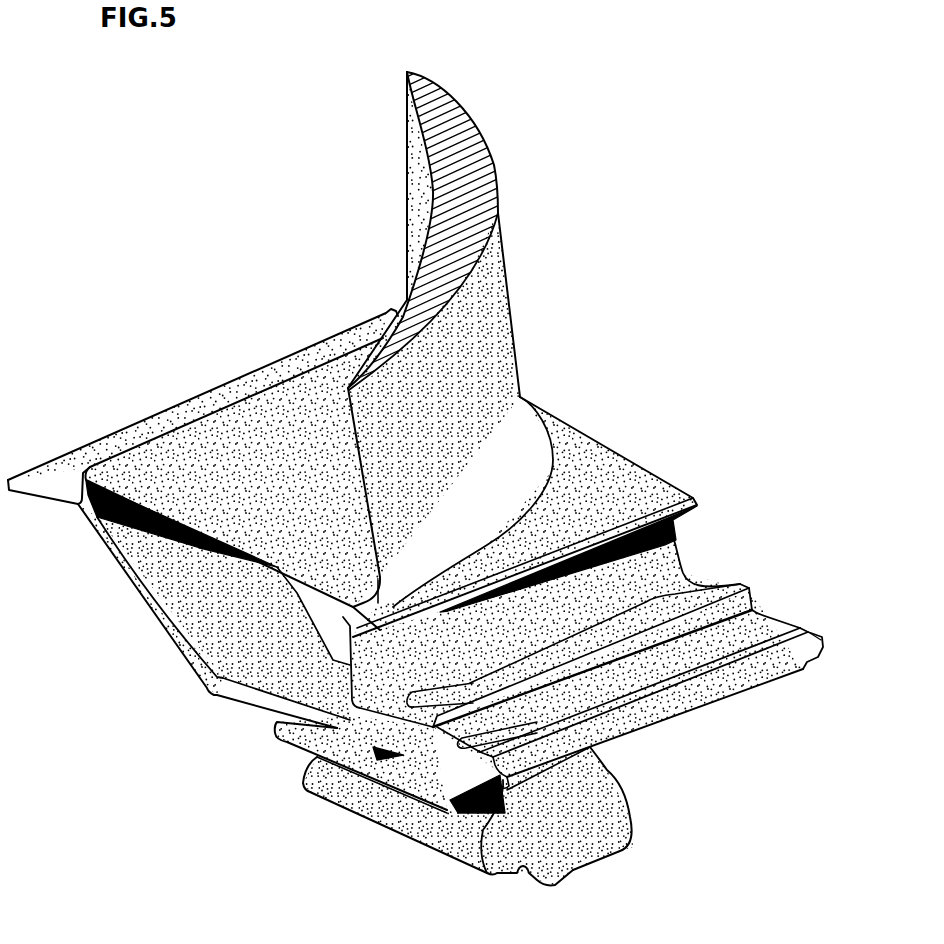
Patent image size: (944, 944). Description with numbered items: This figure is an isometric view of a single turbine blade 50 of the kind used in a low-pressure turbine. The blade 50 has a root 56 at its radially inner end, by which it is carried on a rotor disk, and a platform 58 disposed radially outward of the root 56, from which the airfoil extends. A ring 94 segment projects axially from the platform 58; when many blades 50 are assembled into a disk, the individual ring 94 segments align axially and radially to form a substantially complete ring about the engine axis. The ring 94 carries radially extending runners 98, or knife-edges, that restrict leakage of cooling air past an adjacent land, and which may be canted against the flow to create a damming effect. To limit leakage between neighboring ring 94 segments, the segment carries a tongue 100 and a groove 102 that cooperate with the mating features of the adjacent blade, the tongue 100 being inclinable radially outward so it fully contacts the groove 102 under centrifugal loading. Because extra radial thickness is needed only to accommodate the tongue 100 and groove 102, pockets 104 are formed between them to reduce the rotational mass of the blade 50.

The blade 50 is at (200, 212).
The platform 58 is at (185, 592).
The ring 94 is at (700, 703).
The runner 98 is at (745, 588).
The tongue 100 is at (827, 640).
The pocket 104 is at (540, 723).
The root 56 is at (455, 827).
The groove 102 is at (505, 785).